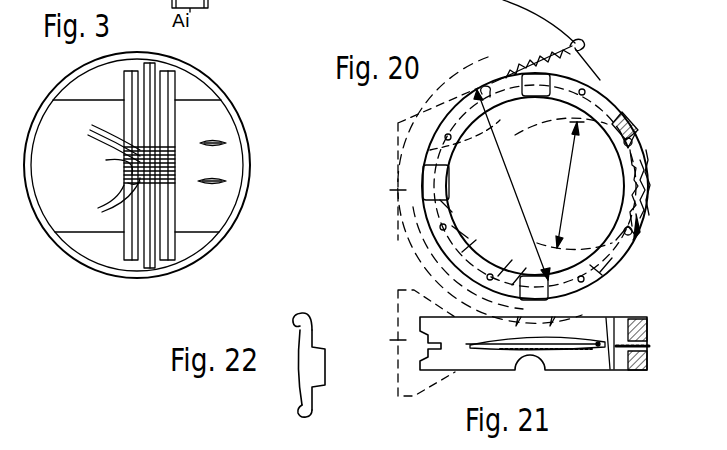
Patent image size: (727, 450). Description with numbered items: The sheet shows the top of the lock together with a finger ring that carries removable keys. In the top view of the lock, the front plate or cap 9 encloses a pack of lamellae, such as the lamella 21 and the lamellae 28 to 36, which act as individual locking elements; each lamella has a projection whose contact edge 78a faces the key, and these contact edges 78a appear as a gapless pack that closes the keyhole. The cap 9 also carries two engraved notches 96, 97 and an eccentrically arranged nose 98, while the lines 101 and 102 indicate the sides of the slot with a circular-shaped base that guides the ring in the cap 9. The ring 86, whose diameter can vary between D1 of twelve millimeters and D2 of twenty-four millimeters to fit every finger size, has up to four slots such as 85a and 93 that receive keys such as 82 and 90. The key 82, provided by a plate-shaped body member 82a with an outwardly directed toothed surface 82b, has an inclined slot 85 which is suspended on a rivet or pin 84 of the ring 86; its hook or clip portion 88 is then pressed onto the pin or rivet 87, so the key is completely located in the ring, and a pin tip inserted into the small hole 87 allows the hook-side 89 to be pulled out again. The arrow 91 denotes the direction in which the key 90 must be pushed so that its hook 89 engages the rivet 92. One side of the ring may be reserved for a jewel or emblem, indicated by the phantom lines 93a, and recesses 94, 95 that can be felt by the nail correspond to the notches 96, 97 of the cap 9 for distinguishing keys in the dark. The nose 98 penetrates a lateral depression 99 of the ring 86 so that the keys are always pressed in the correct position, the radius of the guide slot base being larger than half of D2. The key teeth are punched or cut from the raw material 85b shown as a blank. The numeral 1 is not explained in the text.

In FIG. 3, the housing 1 is at (206, 85).
In FIG. 3, the front plate or cap 9 is at (71, 161).
In FIG. 3, the lamella 21 is at (168, 165).
In FIG. 3, the lamella 28 is at (160, 148).
In FIG. 3, the lamella 36 is at (165, 188).
In FIG. 3, the contact edge 78a is at (100, 209).
In FIG. 3, the notch 96 is at (226, 143).
In FIG. 3, the notch 97 is at (226, 181).
In FIG. 3, the nose 98 is at (114, 158).
In FIG. 3, the slot side line 101 is at (126, 245).
In FIG. 3, the slot side line 102 is at (160, 245).
In FIG. 20, the key 82 is at (628, 168).
In FIG. 20, the body member 82a is at (640, 183).
In FIG. 20, the toothed surface 82b is at (648, 183).
In FIG. 20, the rivet or pin 84 is at (636, 140).
In FIG. 20, the inclined slot 85 is at (624, 146).
In FIG. 22, the inclined slot 85 is at (298, 327).
In FIG. 21, the ring slot 85a is at (648, 350).
In FIG. 22, the raw material 85b is at (318, 346).
In FIG. 20, the ring 86 is at (456, 243).
In FIG. 21, the ring 86 is at (573, 372).
In FIG. 20, the pin or rivet 87 is at (640, 228).
In FIG. 21, the pin or rivet 87 is at (606, 350).
In FIG. 20, the hook or clip portion 88 is at (624, 230).
In FIG. 22, the hook or clip portion 88 is at (296, 409).
In FIG. 20, the hook-side 89 is at (583, 50).
In FIG. 20, the key 90 is at (520, 60).
In FIG. 20, the arrow 91 is at (552, 22).
In FIG. 20, the rivet 92 is at (585, 92).
In FIG. 21, the ring slot 93 is at (432, 340).
In FIG. 20, the phantom lines 93a is at (422, 164).
In FIG. 21, the phantom lines 93a is at (386, 341).
In FIG. 20, the recess 94 is at (510, 316).
In FIG. 20, the recess 95 is at (578, 318).
In FIG. 21, the lateral depression 99 is at (526, 372).
In FIG. 20, the ring diameter D1 is at (570, 185).
In FIG. 20, the ring diameter D2 is at (512, 185).